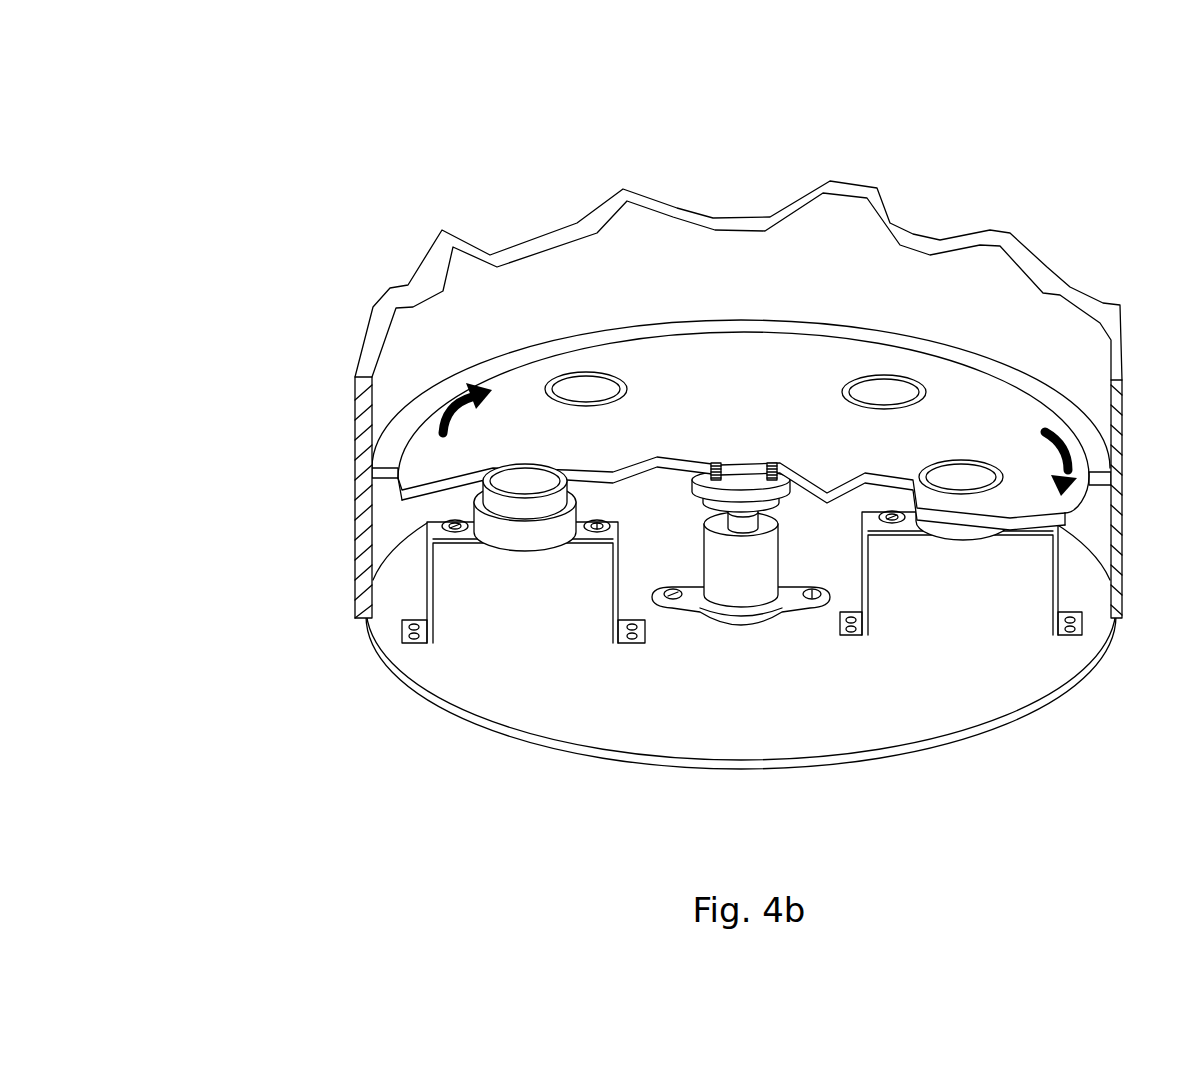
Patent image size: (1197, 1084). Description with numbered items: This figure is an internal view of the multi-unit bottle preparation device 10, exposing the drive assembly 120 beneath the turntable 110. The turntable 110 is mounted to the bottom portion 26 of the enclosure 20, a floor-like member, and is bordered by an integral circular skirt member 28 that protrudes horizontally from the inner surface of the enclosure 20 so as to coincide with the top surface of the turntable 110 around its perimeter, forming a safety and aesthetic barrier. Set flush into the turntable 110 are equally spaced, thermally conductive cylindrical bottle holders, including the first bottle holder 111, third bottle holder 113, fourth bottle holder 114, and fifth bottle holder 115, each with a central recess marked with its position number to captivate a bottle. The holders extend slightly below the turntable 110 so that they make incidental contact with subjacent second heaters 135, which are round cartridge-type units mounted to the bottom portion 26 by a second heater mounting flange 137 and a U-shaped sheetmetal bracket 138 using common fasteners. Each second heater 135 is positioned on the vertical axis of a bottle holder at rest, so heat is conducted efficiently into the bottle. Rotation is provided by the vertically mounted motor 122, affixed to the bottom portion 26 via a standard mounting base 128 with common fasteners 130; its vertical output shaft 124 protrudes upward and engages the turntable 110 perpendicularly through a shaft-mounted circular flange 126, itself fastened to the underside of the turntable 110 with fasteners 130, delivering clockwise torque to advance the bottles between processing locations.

The multi-unit bottle preparation device 10 is at (258, 174).
The enclosure 20 is at (355, 392).
The bottom portion 26 is at (572, 752).
The circular skirt member 28 is at (381, 479).
The turntable 110 is at (731, 357).
The first bottle holder 111 is at (958, 482).
The third bottle holder 113 is at (540, 467).
The fourth bottle holder 114 is at (623, 389).
The fifth bottle holder 115 is at (856, 396).
The drive assembly 120 is at (736, 600).
The motor 122 is at (768, 568).
The vertical output shaft 124 is at (738, 521).
The circular flange 126 is at (702, 486).
The mounting base 128 is at (732, 622).
The fasteners 130 is at (453, 522).
The second heater 135 is at (502, 528).
The second heater mounting flange 137 is at (537, 547).
The U-shaped sheetmetal bracket 138 is at (612, 643).